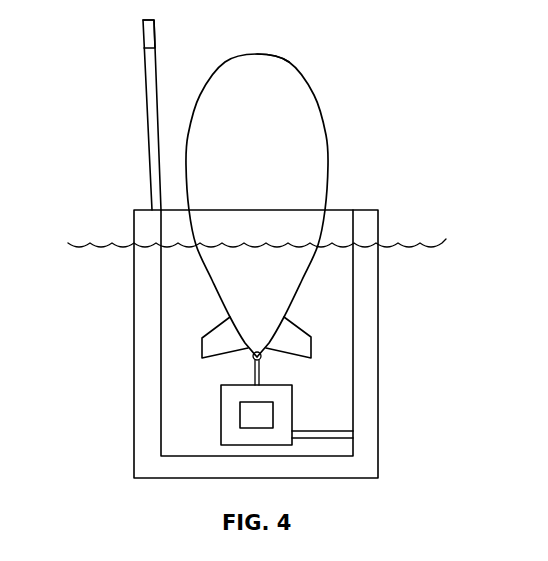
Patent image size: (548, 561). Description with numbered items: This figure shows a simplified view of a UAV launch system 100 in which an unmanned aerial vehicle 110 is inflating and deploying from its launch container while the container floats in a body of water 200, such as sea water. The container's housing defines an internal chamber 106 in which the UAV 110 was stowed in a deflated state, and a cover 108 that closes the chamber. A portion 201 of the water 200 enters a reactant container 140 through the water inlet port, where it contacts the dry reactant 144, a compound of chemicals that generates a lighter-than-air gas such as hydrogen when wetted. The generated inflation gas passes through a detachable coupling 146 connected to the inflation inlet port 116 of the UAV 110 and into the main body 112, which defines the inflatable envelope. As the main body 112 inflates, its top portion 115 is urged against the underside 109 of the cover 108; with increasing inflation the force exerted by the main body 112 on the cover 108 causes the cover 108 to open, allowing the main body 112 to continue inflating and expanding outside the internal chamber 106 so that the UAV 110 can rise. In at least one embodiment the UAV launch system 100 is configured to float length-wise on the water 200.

The UAV launch system 100 is at (84, 158).
The internal chamber 106 is at (178, 282).
The cover 108 is at (143, 74).
The underside of the cover 109 is at (157, 50).
The unmanned aerial vehicle 110 is at (346, 141).
The main body 112 is at (320, 104).
The top portion 115 is at (280, 55).
The inflation inlet port 116 is at (265, 355).
The reactant container 140 is at (221, 410).
The dry reactant 144 is at (273, 413).
The detachable coupling 146 is at (252, 378).
The body of water 200 is at (411, 255).
The portion of the water 201 is at (362, 430).